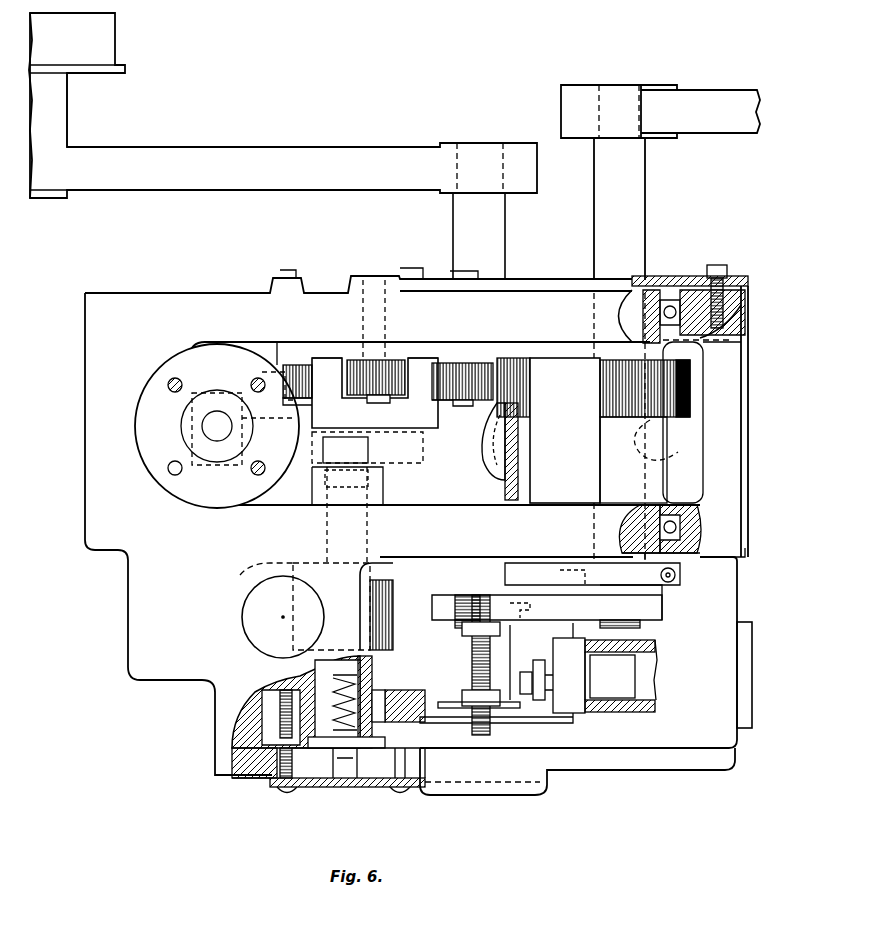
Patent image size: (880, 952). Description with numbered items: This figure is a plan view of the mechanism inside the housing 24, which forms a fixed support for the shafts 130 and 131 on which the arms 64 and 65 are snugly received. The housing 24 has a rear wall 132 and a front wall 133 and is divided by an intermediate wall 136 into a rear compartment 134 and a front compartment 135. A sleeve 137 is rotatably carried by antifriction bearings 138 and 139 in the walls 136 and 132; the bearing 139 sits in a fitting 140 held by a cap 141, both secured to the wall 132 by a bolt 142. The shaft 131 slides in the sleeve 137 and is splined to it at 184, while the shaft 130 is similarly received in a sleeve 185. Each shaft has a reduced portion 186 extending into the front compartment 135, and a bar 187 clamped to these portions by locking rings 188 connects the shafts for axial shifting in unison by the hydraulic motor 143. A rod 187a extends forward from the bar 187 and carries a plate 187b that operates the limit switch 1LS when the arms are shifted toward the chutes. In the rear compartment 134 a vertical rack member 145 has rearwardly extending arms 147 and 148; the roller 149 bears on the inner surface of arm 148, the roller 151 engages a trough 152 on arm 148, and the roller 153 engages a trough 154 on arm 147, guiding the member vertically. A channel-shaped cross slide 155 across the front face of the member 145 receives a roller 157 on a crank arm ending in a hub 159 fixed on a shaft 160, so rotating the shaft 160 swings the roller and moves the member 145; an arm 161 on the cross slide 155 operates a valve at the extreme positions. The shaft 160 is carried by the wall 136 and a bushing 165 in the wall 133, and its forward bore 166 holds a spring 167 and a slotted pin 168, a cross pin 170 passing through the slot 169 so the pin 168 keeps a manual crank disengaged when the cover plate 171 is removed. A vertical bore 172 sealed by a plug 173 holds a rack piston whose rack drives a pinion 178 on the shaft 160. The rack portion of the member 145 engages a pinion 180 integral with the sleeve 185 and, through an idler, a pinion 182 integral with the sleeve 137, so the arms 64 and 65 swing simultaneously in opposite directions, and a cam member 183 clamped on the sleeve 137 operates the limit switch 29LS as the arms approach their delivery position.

The housing 24 is at (126, 617).
The arm 64 is at (258, 148).
The arm 65 is at (710, 90).
The shaft 130 is at (452, 245).
The shaft 131 is at (646, 187).
The rear wall 132 is at (735, 333).
The front wall 133 is at (680, 748).
The rear compartment 134 is at (697, 478).
The front compartment 135 is at (694, 615).
The intermediate wall 136 is at (702, 536).
The sleeve 137 is at (666, 437).
The antifriction bearing 138 is at (700, 513).
The antifriction bearing 139 is at (670, 300).
The fitting 140 is at (749, 284).
The cap 141 is at (740, 275).
The bolt 142 is at (716, 264).
The hydraulic motor 143 is at (578, 465).
The vertical rack member 145 is at (392, 419).
The arm 147 is at (328, 365).
The arm 148 is at (393, 365).
The roller 149 is at (353, 358).
The roller 151 is at (466, 365).
The trough 152 is at (433, 401).
The roller 153 is at (275, 372).
The trough 154 is at (316, 396).
The cross slide 155 is at (418, 453).
The roller 157 is at (366, 446).
The hub 159 is at (315, 492).
The shaft 160 is at (368, 536).
The arm 161 is at (216, 470).
The bushing 165 is at (376, 692).
The bore 166 is at (377, 668).
The spring 167 is at (315, 678).
The pin 168 is at (320, 787).
The slot 169 is at (362, 787).
The cross pin 170 is at (386, 741).
The cover plate 171 is at (340, 787).
The vertical bore 172 is at (250, 592).
The plug 173 is at (255, 638).
The pinion 178 is at (394, 622).
The pinion 180 is at (526, 358).
The pinion 182 is at (690, 390).
The cam member 183 is at (683, 573).
The spline 184 is at (651, 452).
The sleeve 185 is at (446, 478).
The reduced portion 186 is at (445, 600).
The bar 187 is at (663, 612).
The rod 187a is at (470, 670).
The plate 187b is at (520, 706).
The locking ring 188 is at (643, 628).
The limit switch 29LS is at (549, 675).
The limit switch 1LS is at (621, 676).